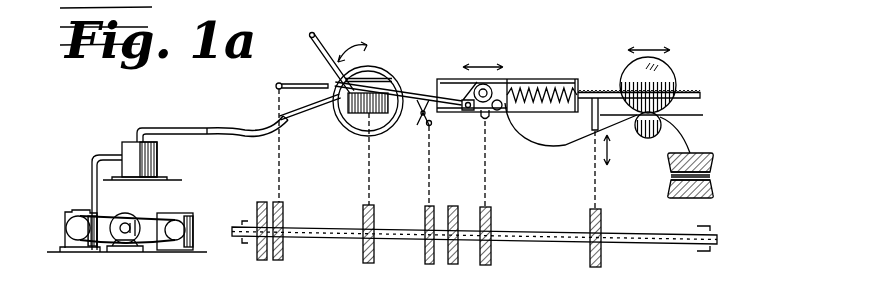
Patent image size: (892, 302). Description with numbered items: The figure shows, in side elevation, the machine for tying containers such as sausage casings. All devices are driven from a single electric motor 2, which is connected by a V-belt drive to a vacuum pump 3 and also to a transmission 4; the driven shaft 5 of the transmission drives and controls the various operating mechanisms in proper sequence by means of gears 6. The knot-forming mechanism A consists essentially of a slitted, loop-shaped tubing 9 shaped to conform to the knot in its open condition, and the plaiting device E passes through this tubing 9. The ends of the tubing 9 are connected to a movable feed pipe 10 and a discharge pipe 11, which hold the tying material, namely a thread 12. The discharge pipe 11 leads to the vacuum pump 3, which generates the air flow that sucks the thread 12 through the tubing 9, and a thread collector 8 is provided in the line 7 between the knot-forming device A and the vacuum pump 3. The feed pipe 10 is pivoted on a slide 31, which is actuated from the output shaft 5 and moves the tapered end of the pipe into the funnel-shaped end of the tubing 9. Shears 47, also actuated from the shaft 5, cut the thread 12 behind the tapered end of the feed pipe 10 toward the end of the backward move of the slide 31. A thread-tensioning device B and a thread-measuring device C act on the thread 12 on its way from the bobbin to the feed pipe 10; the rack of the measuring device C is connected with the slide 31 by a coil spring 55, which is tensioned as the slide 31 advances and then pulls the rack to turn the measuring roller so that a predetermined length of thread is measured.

The electric motor 2 is at (125, 244).
The vacuum pump 3 is at (81, 249).
The transmission 4 is at (176, 250).
The driven shaft 5 is at (331, 238).
The gears 6 is at (284, 212).
The line 7 is at (103, 157).
The thread collector 8 is at (157, 160).
The slitted tubing 9 is at (358, 135).
The feed pipe 10 is at (405, 86).
The discharge pipe 11 is at (318, 118).
The thread 12 is at (594, 130).
The slide 31 is at (510, 104).
The shears 47 is at (420, 124).
The coil spring 55 is at (559, 89).
The knot-forming mechanism A is at (339, 56).
The thread-tensioning device B is at (488, 43).
The thread-measuring device C is at (648, 77).
The plaiting device E is at (357, 110).